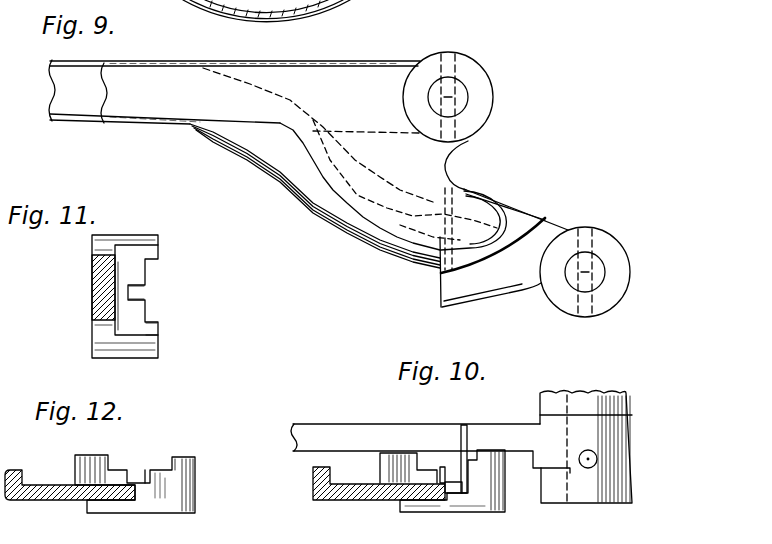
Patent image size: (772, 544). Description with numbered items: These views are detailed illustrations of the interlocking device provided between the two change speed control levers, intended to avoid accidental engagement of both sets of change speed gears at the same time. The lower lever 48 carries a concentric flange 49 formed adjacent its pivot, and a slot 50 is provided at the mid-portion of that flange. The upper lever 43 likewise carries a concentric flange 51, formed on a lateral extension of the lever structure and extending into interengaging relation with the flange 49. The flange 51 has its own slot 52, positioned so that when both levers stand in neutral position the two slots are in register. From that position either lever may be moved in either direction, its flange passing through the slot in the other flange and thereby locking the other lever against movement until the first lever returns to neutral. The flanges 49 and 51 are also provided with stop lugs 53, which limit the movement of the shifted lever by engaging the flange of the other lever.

In FIG. 9, the upper lever 43 is at (358, 71).
In FIG. 12, the upper lever 43 is at (33, 493).
In FIG. 10, the upper lever 43 is at (343, 492).
In FIG. 9, the lower lever 48 is at (258, 138).
In FIG. 11, the lower lever 48 is at (93, 292).
In FIG. 10, the lower lever 48 is at (323, 430).
In FIG. 9, the concentric flange 49 is at (437, 270).
In FIG. 11, the concentric flange 49 is at (142, 238).
In FIG. 10, the concentric flange 49 is at (450, 460).
In FIG. 9, the slot 50 is at (410, 270).
In FIG. 11, the slot 50 is at (137, 292).
In FIG. 9, the concentric flange 51 is at (397, 263).
In FIG. 12, the concentric flange 51 is at (178, 481).
In FIG. 10, the concentric flange 51 is at (397, 498).
In FIG. 9, the slot 52 is at (497, 192).
In FIG. 12, the slot 52 is at (143, 478).
In FIG. 9, the stop lugs 53 is at (471, 185).
In FIG. 11, the stop lugs 53 is at (157, 337).
In FIG. 12, the stop lugs 53 is at (188, 457).